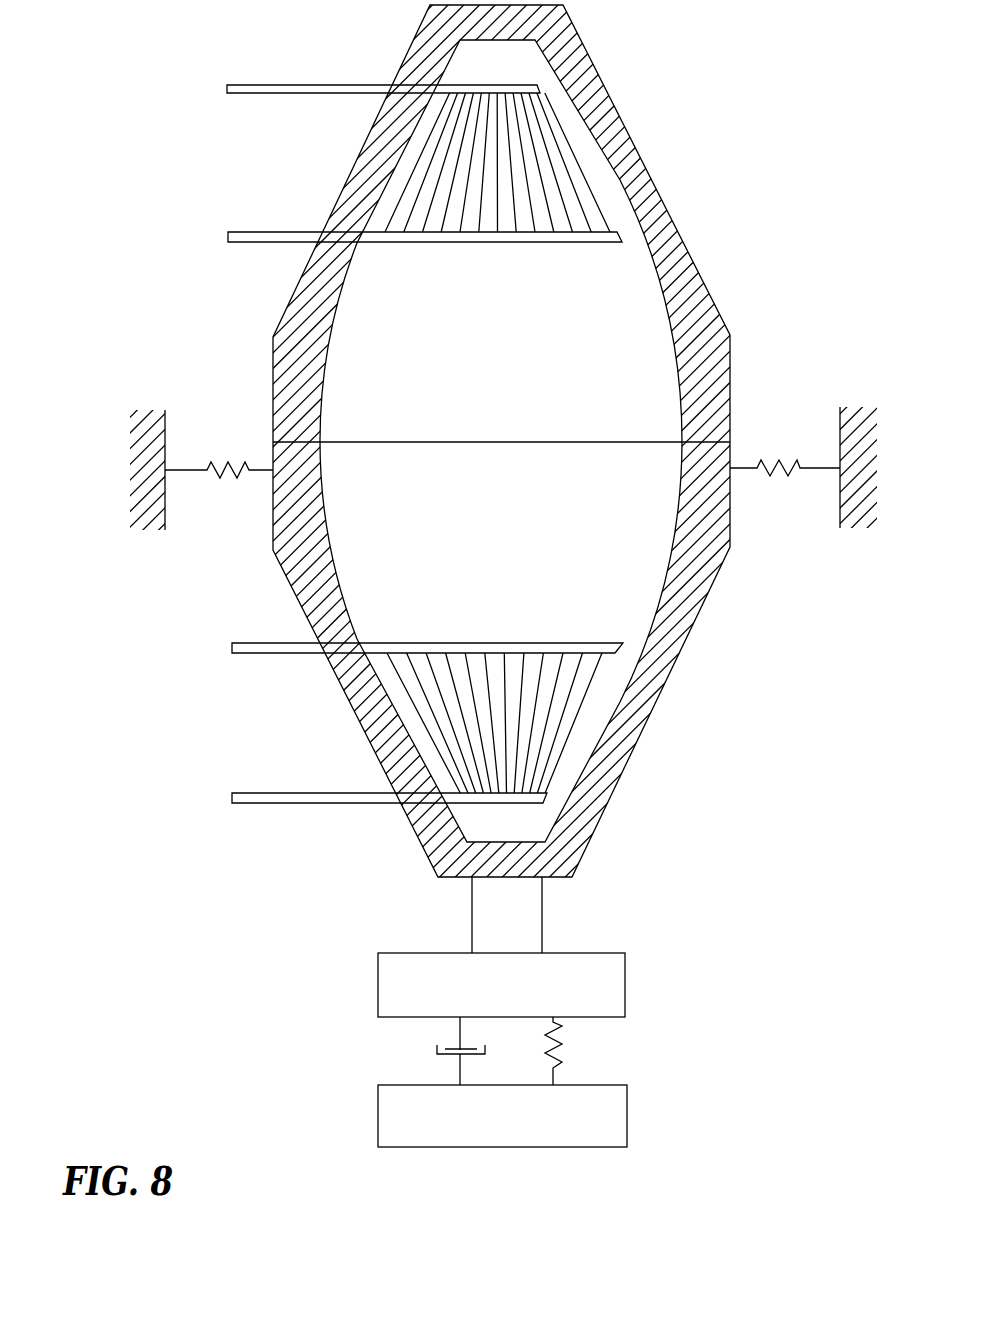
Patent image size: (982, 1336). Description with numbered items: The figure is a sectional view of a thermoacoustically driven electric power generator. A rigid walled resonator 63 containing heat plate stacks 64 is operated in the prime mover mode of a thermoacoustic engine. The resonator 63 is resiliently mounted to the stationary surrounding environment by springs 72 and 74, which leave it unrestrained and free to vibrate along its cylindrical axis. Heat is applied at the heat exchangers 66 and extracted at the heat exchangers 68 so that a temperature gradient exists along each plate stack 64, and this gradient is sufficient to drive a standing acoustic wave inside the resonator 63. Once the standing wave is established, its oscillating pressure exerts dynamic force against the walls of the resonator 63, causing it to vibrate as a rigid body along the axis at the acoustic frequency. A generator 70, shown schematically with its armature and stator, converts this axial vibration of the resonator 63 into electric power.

The rigid walled resonator 63 is at (708, 288).
The heat plate stacks 64 is at (508, 200).
The heat exchangers 66 is at (225, 88).
The heat exchangers 68 is at (227, 235).
The generator 70 is at (700, 985).
The spring 72 is at (227, 460).
The spring 74 is at (780, 455).